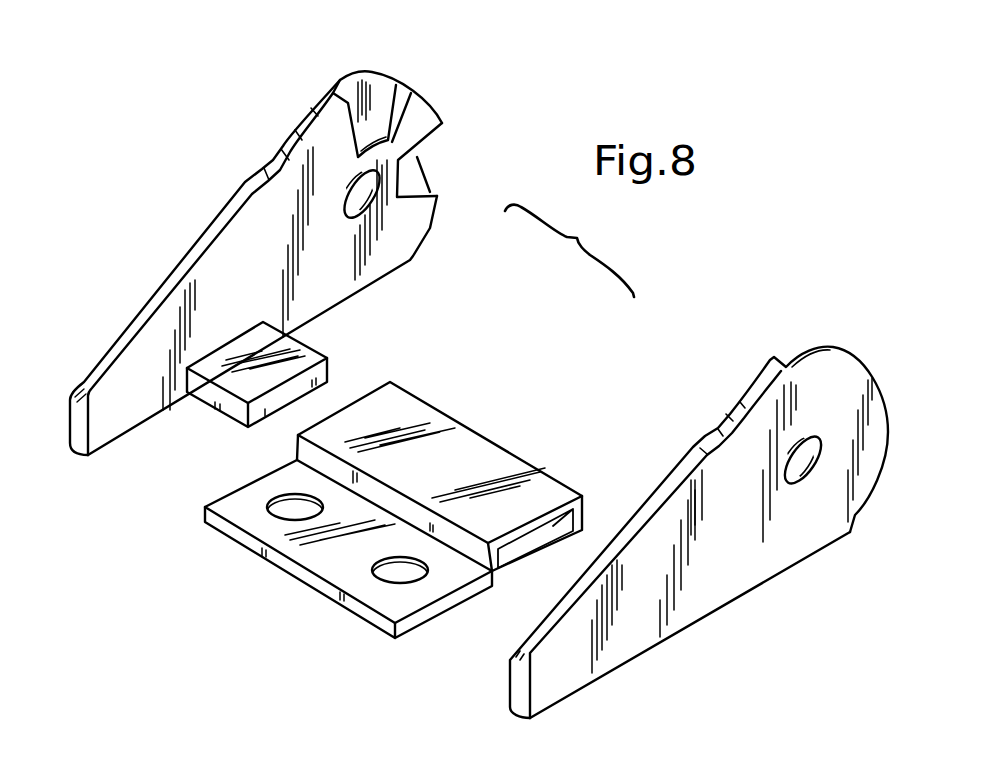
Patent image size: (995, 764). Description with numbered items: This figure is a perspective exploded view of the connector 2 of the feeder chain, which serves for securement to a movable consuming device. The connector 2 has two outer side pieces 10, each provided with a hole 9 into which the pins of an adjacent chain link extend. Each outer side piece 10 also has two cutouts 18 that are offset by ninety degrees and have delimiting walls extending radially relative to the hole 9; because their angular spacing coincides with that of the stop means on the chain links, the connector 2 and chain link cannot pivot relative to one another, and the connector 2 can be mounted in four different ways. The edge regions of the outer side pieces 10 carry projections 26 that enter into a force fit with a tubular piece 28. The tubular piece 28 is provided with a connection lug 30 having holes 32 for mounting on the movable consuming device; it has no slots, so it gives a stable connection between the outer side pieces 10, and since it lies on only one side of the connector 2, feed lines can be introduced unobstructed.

The connector 2 is at (226, 667).
The holes 9 is at (370, 208).
The outer side pieces 10 is at (233, 252).
The cutouts 18 is at (373, 90).
The projections 26 is at (243, 388).
The tubular piece 28 is at (452, 448).
The connection lug 30 is at (315, 558).
The holes 32 is at (283, 513).